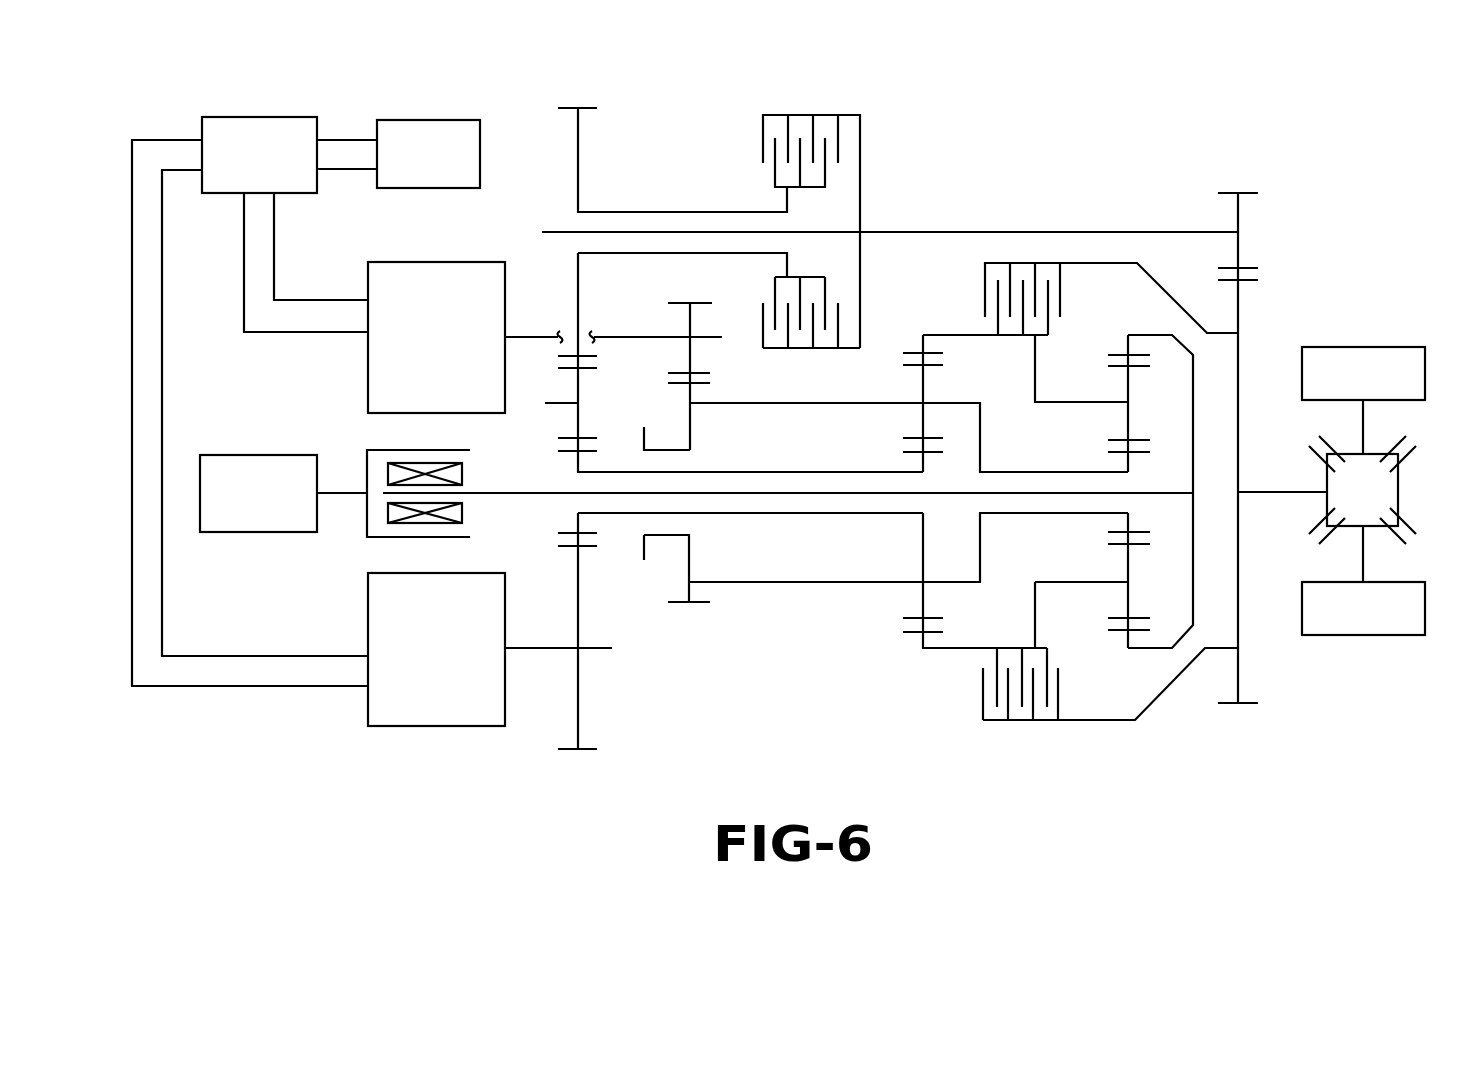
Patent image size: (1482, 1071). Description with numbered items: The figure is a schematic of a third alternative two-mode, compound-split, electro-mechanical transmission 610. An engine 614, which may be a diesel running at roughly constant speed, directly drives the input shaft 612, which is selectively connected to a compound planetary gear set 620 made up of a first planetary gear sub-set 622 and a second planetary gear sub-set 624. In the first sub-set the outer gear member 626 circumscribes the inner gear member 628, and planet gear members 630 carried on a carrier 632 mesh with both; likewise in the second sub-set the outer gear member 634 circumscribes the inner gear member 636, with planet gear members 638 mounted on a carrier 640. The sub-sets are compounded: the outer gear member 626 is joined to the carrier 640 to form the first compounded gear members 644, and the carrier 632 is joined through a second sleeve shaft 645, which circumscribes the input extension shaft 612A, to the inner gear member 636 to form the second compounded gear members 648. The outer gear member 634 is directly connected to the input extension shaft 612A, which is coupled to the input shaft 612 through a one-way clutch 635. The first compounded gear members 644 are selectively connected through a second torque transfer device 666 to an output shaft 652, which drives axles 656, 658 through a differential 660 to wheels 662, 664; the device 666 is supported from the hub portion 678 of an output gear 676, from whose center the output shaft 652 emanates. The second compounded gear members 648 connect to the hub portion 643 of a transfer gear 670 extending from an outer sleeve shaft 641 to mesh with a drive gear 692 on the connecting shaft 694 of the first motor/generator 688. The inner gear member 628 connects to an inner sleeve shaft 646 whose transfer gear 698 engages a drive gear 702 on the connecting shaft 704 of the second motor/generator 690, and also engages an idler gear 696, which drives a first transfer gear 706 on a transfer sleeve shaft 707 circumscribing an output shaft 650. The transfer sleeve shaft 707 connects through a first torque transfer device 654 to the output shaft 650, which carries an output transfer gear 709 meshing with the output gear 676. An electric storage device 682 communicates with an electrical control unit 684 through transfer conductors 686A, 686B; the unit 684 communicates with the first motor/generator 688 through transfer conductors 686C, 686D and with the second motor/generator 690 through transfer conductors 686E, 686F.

The two-mode, compound-split, electro-mechanical transmission 610 is at (955, 146).
The input shaft 612 is at (337, 495).
The input extension shaft 612A is at (523, 493).
The engine 614 is at (234, 507).
The compound planetary gear set 620 is at (915, 706).
The first planetary gear sub-set 622 is at (897, 641).
The second planetary gear sub-set 624 is at (1110, 644).
The outer gear member 626 is at (922, 343).
The inner gear member 628 is at (903, 458).
The planet gear members 630 is at (925, 390).
The carrier 632 is at (982, 458).
The outer gear member 634 is at (1127, 343).
The motor/generator 635 is at (374, 449).
The inner gear member 636 is at (1128, 528).
The planet gear members 638 is at (1128, 428).
The carrier 640 is at (1037, 392).
The outer sleeve shaft 641 is at (670, 450).
The hub portion 643 is at (690, 420).
The first compounded gear members 644 is at (958, 324).
The second sleeve shaft 645 is at (1020, 518).
The inner sleeve shaft 646 is at (790, 515).
The second compounded gear members 648 is at (1001, 521).
The output shaft 650 is at (1026, 232).
The output shaft 652 is at (1278, 492).
The first torque transfer device 654 is at (758, 136).
The axle 656 is at (1365, 420).
The axle 658 is at (1363, 562).
The differential 660 is at (1393, 495).
The wheel 662 is at (1339, 387).
The wheel 664 is at (1339, 622).
The second torque transfer device 666 is at (981, 693).
The transfer gear 670 is at (700, 394).
The output gear 676 is at (1240, 683).
The hub portion 678 is at (1240, 356).
The electric storage device 682 is at (404, 168).
The electrical control unit 684 is at (235, 169).
The transfer conductor 686A is at (348, 140).
The transfer conductor 686B is at (347, 170).
The transfer conductor 686C is at (320, 300).
The transfer conductor 686D is at (305, 332).
The transfer conductor 686E is at (232, 656).
The transfer conductor 686F is at (231, 686).
The first motor/generator 688 is at (412, 352).
The second motor/generator 690 is at (413, 662).
The drive gear 692 is at (690, 316).
The connecting shaft 694 is at (624, 337).
The idler gear 696 is at (580, 390).
The transfer gear 698 is at (577, 530).
The drive gear 702 is at (580, 690).
The connecting shaft 704 is at (535, 650).
The first transfer gear 706 is at (580, 128).
The transfer sleeve shaft 707 is at (705, 212).
The output transfer gear 709 is at (1240, 213).